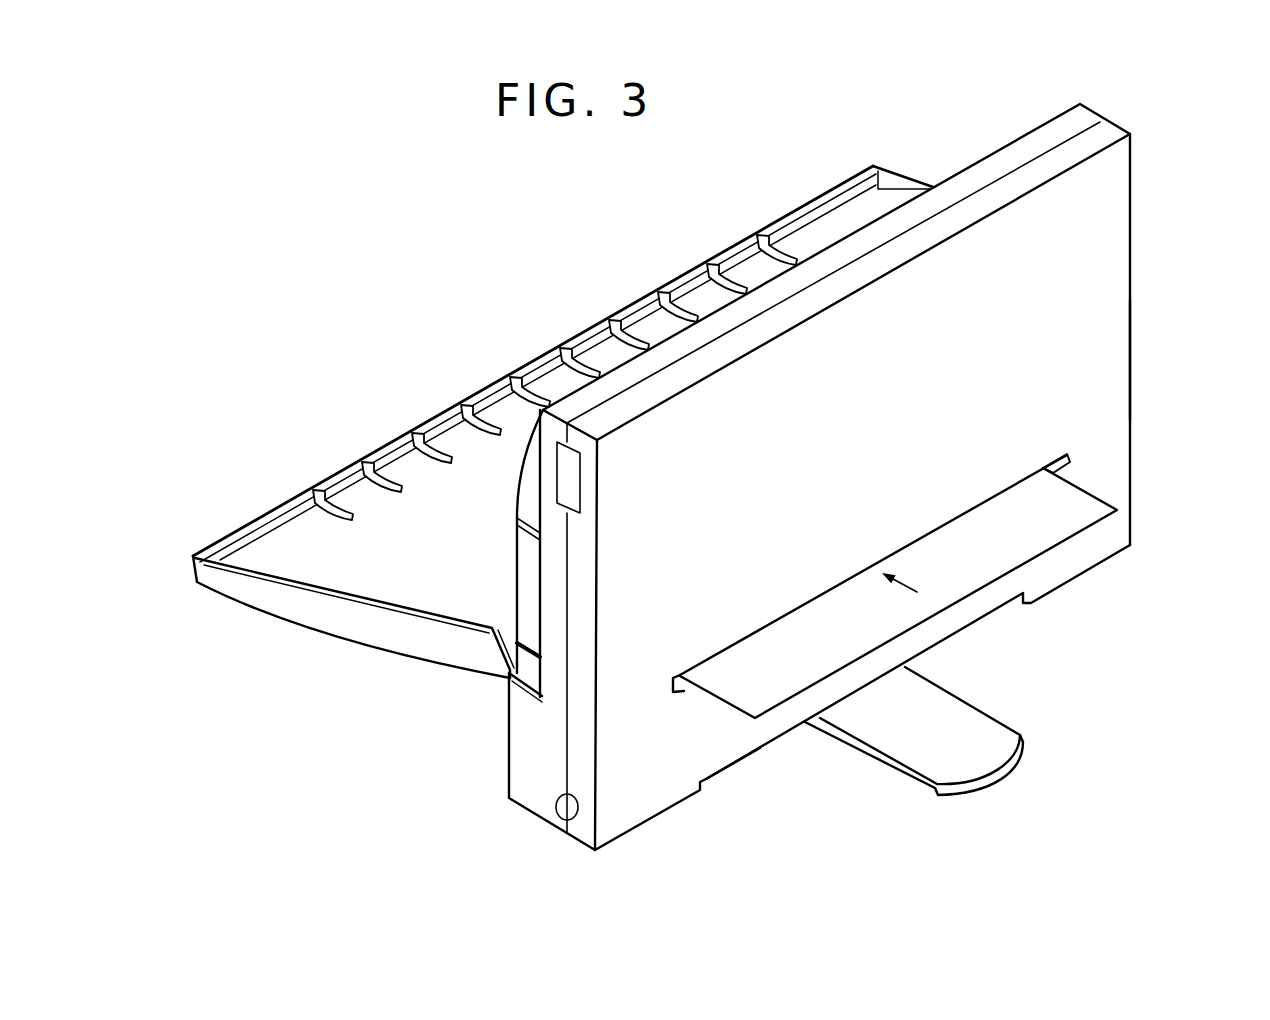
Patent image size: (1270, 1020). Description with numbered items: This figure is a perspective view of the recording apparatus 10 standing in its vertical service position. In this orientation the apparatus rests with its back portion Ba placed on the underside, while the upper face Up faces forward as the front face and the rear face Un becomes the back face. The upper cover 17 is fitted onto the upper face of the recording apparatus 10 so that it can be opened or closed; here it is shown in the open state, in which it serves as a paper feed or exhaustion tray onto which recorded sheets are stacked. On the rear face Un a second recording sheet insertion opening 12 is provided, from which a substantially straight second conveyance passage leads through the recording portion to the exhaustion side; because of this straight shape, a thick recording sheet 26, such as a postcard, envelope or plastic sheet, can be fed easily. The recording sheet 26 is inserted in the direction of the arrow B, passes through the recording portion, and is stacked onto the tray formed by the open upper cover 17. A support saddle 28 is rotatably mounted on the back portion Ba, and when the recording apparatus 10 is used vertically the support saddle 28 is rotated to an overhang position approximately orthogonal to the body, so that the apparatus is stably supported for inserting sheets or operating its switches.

The recording apparatus 10 is at (887, 504).
The second recording sheet insertion opening 12 is at (1072, 460).
The upper cover 17 is at (563, 434).
The recording sheet 26 is at (1102, 503).
The support saddle 28 is at (957, 709).
The upper face Up is at (620, 295).
The rear face Un is at (1118, 360).
The arrow B is at (907, 579).
The back portion Ba is at (695, 820).